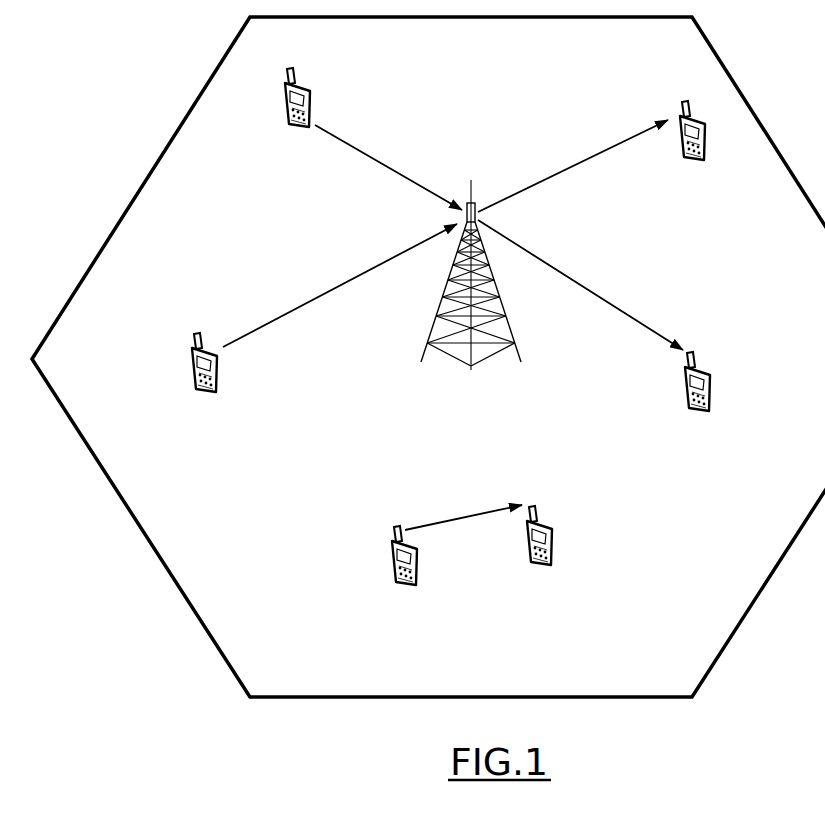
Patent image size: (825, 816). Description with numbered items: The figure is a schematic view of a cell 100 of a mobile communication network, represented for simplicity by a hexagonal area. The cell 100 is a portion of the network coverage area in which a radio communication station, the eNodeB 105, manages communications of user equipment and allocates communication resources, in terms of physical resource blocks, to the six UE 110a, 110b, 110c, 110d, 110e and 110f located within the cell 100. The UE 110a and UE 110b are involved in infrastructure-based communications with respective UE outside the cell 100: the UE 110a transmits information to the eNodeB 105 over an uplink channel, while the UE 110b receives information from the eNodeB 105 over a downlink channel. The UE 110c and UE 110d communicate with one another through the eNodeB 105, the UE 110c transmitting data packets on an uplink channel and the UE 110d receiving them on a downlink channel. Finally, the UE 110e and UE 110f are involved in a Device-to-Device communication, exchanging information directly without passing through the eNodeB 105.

The cell 100 is at (142, 190).
The eNodeB 105 is at (432, 342).
The UE 110a is at (283, 90).
The UE 110b is at (700, 117).
The UE 110c is at (192, 360).
The UE 110d is at (702, 367).
The UE 110e is at (393, 537).
The UE 110f is at (553, 527).